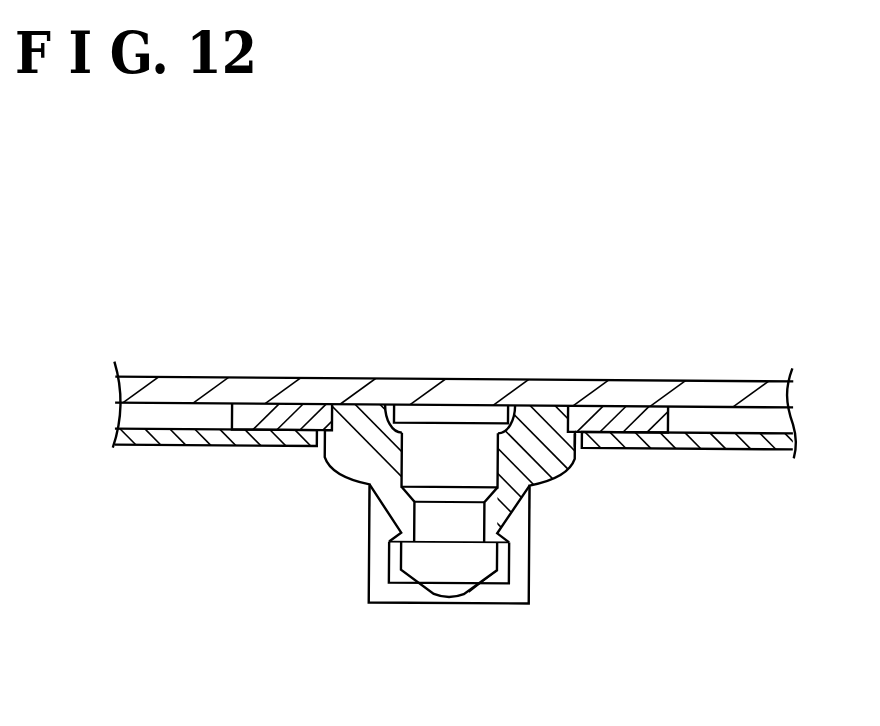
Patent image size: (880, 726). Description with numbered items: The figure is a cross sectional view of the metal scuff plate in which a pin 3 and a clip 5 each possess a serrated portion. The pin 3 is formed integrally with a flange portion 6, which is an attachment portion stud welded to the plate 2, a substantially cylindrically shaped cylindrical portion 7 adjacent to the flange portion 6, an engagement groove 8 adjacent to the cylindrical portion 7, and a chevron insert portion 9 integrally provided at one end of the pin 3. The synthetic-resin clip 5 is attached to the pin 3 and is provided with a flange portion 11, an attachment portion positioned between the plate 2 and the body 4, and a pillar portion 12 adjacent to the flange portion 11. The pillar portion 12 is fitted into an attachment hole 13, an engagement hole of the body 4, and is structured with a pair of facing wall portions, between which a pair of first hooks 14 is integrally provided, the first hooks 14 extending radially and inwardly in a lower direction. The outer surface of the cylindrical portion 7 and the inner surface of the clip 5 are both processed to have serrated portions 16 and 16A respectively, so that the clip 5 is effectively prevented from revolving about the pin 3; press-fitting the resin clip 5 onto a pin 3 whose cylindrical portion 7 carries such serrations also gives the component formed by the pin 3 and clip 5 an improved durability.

The plate 2 is at (653, 392).
The pin 3 is at (480, 593).
The body 4 is at (730, 449).
The clip 5 is at (350, 493).
The flange portion 6 is at (482, 412).
The cylindrical portion 7 is at (433, 445).
The engagement groove 8 is at (487, 516).
The chevron insert portion 9 is at (430, 594).
The flange portion 11 is at (257, 420).
The pillar portion 12 is at (532, 577).
The attachment hole 13 is at (579, 445).
The first hooks 14 is at (397, 543).
The serrated portion 16 is at (370, 498).
The serrated portion 16A is at (523, 491).